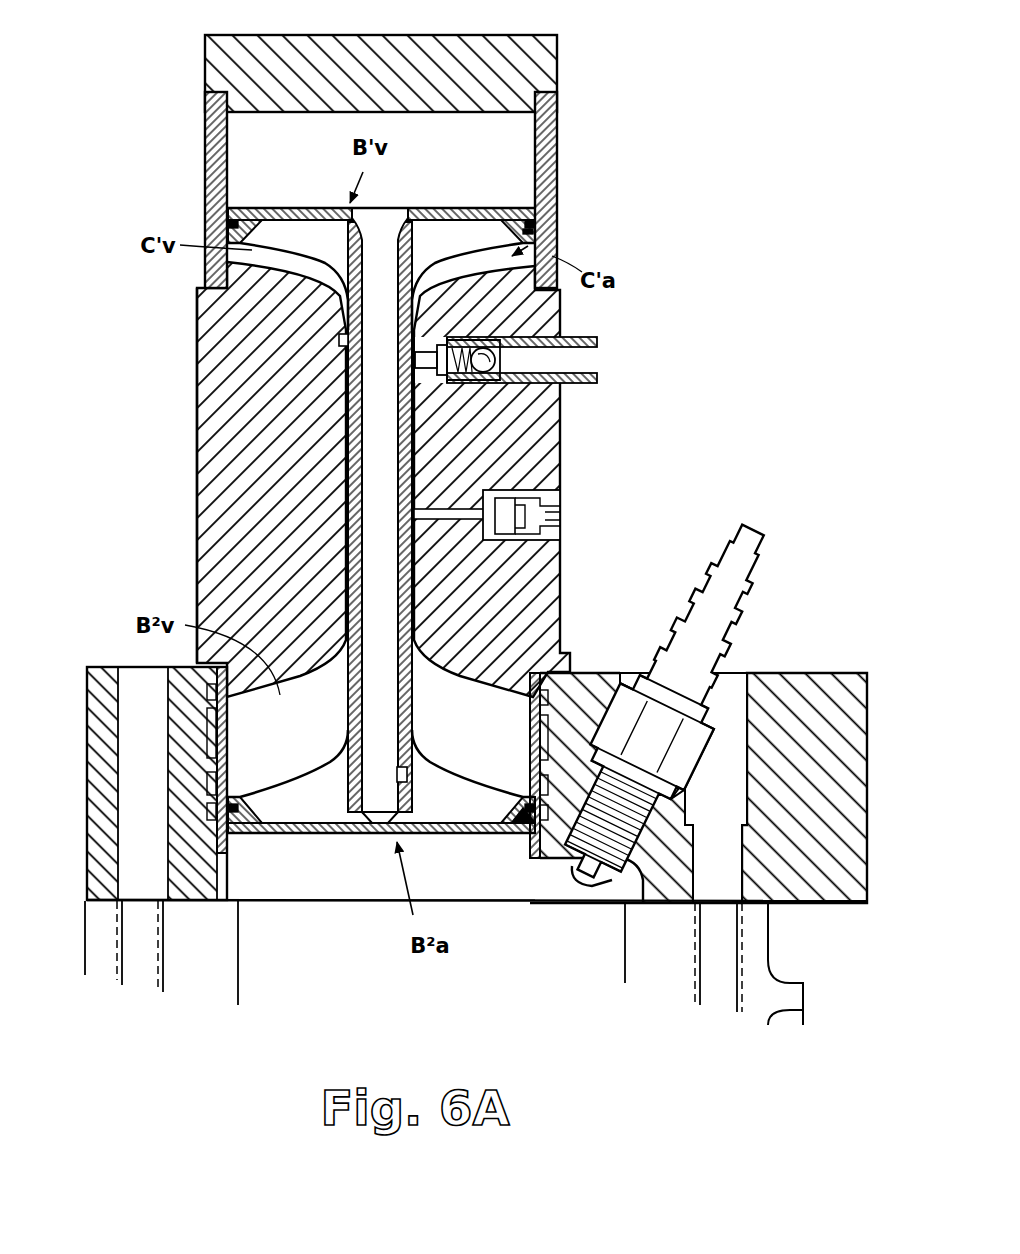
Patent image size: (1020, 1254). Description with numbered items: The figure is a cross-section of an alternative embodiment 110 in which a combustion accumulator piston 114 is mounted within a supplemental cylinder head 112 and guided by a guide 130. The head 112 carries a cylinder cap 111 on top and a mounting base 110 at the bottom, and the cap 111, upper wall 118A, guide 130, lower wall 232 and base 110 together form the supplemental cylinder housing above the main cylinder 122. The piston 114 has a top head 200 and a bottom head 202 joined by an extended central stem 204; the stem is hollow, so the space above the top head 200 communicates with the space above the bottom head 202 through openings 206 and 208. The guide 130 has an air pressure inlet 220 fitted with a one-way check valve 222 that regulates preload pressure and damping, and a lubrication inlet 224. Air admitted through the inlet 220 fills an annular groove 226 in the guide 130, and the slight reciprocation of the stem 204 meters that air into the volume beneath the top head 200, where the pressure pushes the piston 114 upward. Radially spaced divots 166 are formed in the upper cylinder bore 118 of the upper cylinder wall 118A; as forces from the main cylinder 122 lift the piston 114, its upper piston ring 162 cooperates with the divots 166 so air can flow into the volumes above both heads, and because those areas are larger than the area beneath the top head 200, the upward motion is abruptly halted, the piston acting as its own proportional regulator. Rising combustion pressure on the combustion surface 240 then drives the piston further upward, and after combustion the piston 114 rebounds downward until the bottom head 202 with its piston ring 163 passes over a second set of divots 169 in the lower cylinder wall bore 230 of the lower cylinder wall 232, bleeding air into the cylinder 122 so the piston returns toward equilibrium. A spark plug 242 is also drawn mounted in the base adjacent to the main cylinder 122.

The cylinder cap 111 is at (428, 45).
The upper cylinder bore 118 is at (228, 133).
The upper cylinder wall 118A is at (557, 140).
The guide 130 is at (230, 470).
The extended central stem 204 is at (348, 435).
The opening 208 is at (372, 225).
The top head 200 is at (280, 228).
The divots 166 is at (530, 218).
The upper piston ring 162 is at (523, 228).
The combustion accumulator piston 114 is at (483, 207).
The annular groove 226 is at (340, 340).
The opening 206 is at (407, 778).
The bottom head 202 is at (303, 842).
The lower cylinder wall bore 230 is at (230, 770).
The combustion surface 240 is at (320, 838).
The piston ring 163 is at (515, 826).
The air pressure inlet 220 is at (594, 352).
The check valve 222 is at (500, 358).
The lubrication inlet 224 is at (560, 515).
The divots 169 is at (228, 840).
The lower cylinder wall 232 is at (537, 707).
The spark plug 242 is at (683, 600).
The mounting base 110 is at (800, 928).
The main cylinder 122 is at (335, 968).
The supplemental cylinder head 112 is at (172, 548).